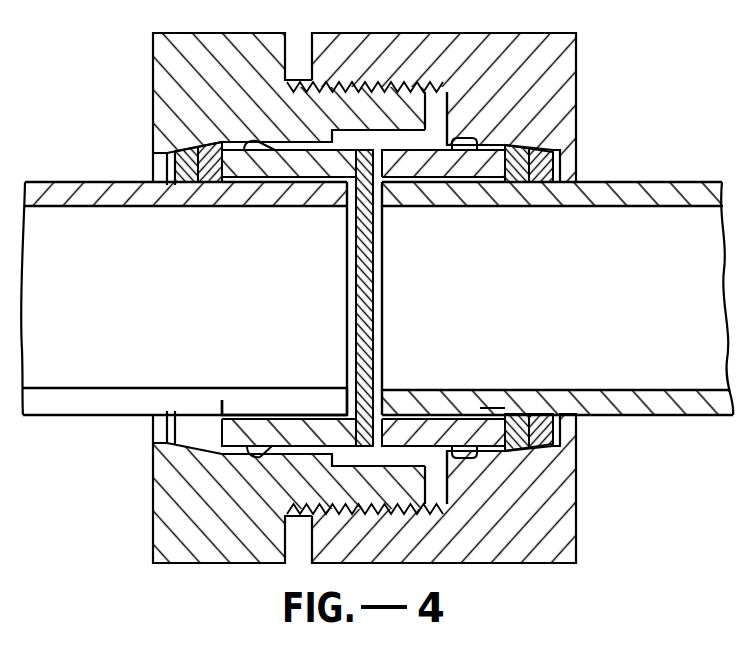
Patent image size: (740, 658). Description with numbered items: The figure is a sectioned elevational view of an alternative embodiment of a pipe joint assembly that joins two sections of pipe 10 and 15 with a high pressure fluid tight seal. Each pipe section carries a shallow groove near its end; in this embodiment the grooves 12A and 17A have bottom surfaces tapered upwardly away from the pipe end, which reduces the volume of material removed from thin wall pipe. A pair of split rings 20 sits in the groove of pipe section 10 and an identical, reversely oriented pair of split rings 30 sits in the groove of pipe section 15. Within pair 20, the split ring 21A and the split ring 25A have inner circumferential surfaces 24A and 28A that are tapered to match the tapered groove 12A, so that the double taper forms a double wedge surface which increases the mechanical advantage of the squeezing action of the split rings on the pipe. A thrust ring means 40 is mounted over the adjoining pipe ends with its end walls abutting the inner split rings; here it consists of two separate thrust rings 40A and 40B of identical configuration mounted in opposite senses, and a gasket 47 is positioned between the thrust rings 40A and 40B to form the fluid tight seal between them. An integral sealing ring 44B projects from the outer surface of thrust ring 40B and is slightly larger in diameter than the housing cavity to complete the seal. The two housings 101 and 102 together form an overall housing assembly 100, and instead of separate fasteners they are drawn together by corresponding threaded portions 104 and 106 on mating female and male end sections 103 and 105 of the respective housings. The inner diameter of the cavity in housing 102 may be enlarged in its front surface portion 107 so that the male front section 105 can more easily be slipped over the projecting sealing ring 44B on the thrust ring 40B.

The pipe section 10 is at (654, 170).
The pipe section 15 is at (70, 178).
The split ring pair 20 is at (547, 147).
The split ring pair 30 is at (180, 140).
The housing assembly 100 is at (368, 298).
The housing 101 is at (565, 67).
The housing 102 is at (168, 62).
The female end section 103 is at (400, 27).
The threaded portion 104 is at (410, 42).
The male end section 105 is at (350, 113).
The threaded portion 106 is at (310, 112).
The front surface portion 107 is at (396, 130).
The integral sealing ring 44B is at (257, 148).
The thrust ring means 40 is at (412, 509).
The thrust ring 40A is at (498, 448).
The thrust ring 40B is at (300, 433).
The gasket 47 is at (366, 447).
The groove 17A is at (232, 408).
The groove 12A is at (483, 408).
The split ring 21A is at (545, 442).
The inner circumferential surface 24A is at (546, 430).
The split ring 25A is at (488, 448).
The inner circumferential surface 28A is at (523, 440).